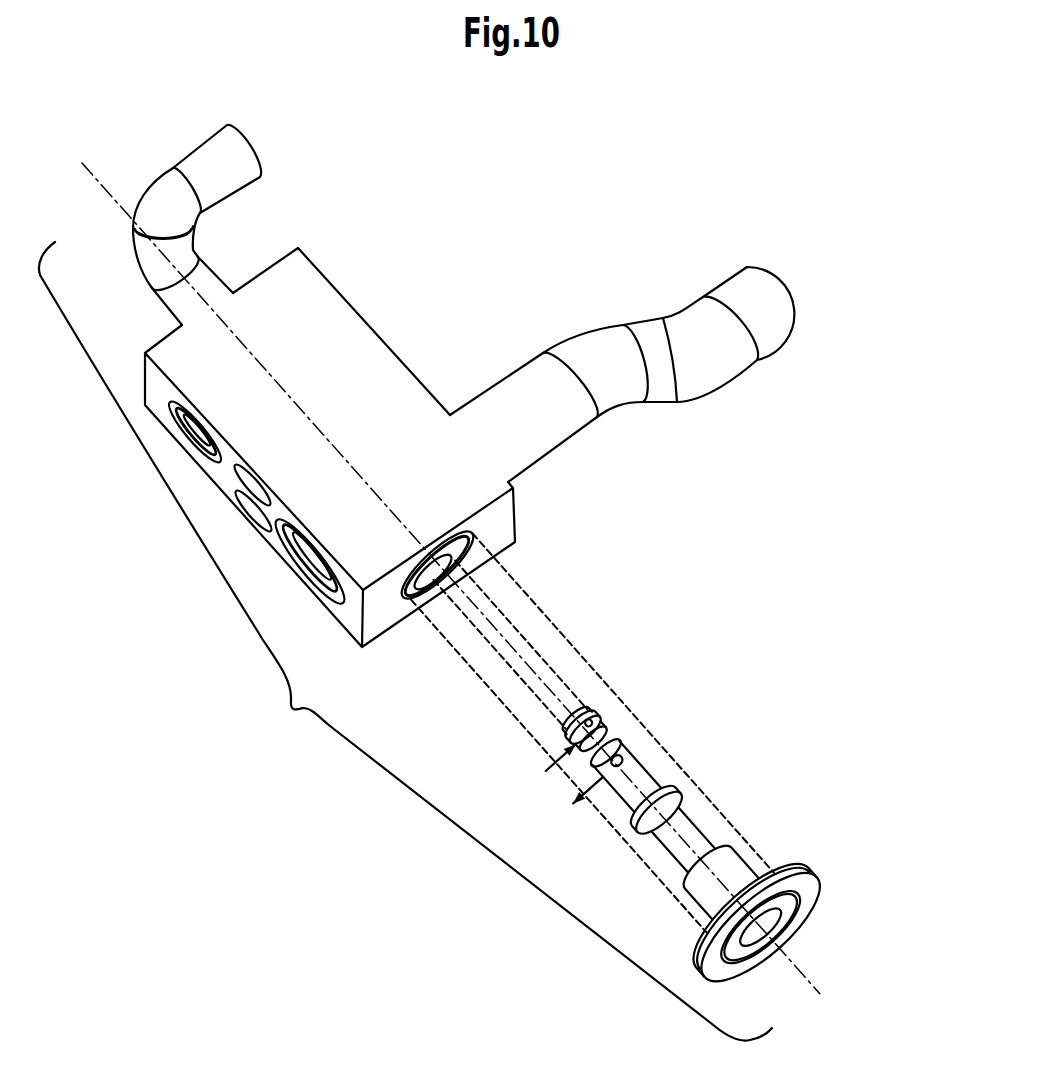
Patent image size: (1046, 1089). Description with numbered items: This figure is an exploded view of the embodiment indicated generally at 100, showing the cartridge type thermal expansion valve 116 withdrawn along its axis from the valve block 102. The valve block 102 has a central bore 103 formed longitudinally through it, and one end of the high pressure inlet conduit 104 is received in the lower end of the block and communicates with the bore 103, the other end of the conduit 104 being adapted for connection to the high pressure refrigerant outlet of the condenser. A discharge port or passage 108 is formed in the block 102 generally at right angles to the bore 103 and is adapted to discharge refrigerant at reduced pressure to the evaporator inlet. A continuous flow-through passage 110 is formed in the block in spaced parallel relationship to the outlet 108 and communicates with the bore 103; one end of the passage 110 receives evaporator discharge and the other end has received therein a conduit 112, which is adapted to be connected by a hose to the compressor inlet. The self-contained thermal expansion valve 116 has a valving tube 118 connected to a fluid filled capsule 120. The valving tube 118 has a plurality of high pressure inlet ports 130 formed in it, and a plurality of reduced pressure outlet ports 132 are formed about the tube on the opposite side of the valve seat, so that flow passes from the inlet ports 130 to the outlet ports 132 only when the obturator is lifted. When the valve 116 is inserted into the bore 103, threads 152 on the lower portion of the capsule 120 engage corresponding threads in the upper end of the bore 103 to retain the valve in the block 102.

The thermal expansion valve assembly embodiment 100 is at (270, 724).
The valve block 102 is at (318, 270).
The central bore 103 is at (467, 573).
The high pressure inlet conduit 104 is at (195, 147).
The discharge port 108 is at (192, 423).
The flow-through passage 110 is at (381, 603).
The conduit 112 is at (498, 382).
The thermal expansion valve 116 is at (706, 769).
The valving tube 118 is at (638, 757).
The fluid filled capsule 120 is at (810, 906).
The high pressure inlet ports 130 is at (600, 722).
The reduced pressure outlet ports 132 is at (617, 766).
The threads 152 is at (748, 857).